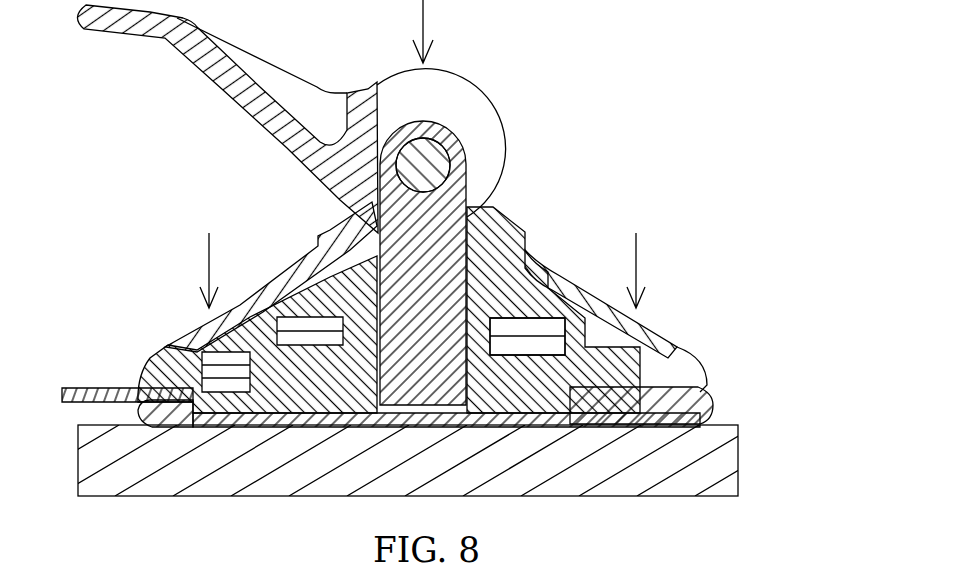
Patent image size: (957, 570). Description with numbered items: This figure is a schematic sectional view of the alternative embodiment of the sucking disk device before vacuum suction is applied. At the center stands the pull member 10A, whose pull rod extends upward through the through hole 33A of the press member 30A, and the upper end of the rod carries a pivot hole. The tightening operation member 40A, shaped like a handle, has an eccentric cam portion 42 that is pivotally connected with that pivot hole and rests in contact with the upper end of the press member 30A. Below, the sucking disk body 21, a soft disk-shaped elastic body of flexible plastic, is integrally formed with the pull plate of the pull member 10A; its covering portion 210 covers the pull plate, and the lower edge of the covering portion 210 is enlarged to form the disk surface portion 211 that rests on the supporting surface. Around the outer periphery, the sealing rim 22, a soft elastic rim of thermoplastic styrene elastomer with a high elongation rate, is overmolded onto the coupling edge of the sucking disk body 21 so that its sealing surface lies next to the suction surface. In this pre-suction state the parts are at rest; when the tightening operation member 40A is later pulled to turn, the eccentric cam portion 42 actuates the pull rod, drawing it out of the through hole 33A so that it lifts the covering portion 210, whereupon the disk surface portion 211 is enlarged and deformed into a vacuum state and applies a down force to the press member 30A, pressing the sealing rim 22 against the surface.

The pull member 10A is at (418, 250).
The sucking disk body 21 is at (545, 388).
The covering portion 210 is at (493, 357).
The disk surface portion 211 is at (578, 417).
The sealing rim 22 is at (708, 407).
The press member 30A is at (170, 345).
The through hole 33A is at (490, 223).
The tightening operation member 40A is at (167, 37).
The eccentric cam portion 42 is at (453, 93).